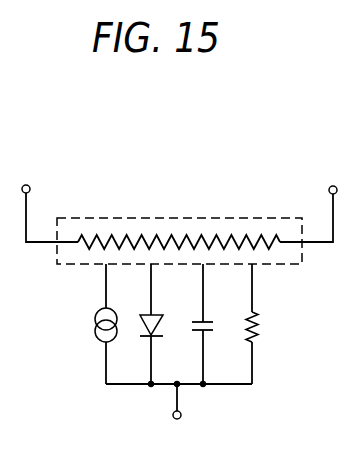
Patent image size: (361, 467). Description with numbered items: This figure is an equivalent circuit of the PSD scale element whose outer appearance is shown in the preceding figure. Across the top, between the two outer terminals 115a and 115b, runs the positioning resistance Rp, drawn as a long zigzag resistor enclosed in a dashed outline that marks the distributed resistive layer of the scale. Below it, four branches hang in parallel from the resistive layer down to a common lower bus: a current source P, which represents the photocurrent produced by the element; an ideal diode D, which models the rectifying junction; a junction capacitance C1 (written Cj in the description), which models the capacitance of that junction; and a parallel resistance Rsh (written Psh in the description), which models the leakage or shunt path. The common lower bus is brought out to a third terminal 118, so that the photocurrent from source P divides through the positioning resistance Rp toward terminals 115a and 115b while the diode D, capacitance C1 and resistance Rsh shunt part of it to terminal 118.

The first terminal 115a is at (29, 185).
The second terminal 115b is at (330, 187).
The positioning resistance Rp is at (191, 219).
The current source P is at (95, 321).
The ideal diode D is at (163, 325).
The junction capacitance C1 is at (215, 323).
The parallel resistance Rsh is at (258, 323).
The output terminal 118 is at (180, 418).